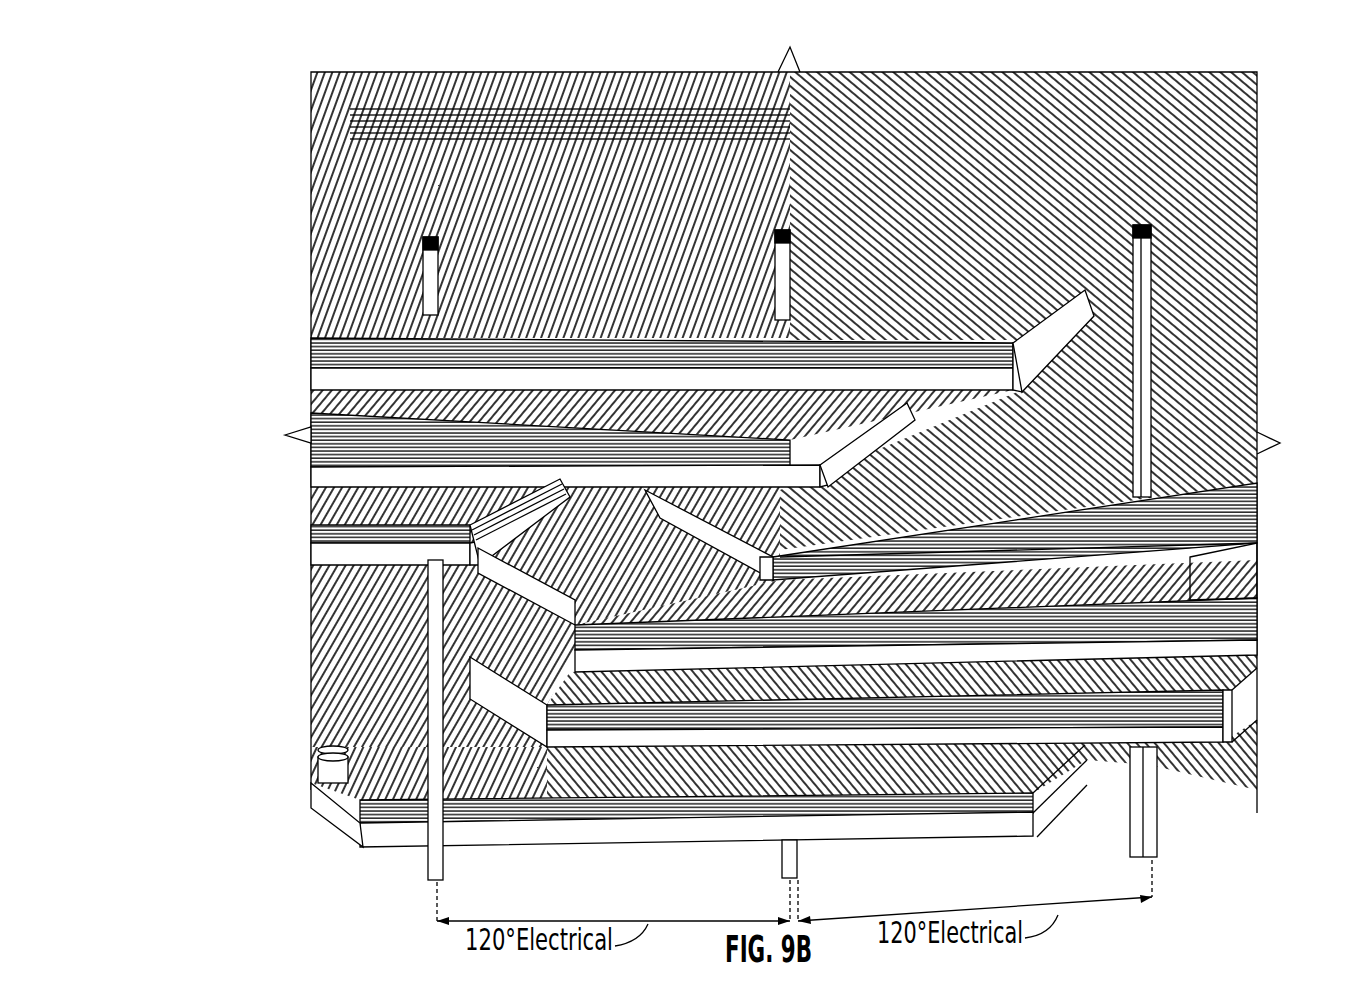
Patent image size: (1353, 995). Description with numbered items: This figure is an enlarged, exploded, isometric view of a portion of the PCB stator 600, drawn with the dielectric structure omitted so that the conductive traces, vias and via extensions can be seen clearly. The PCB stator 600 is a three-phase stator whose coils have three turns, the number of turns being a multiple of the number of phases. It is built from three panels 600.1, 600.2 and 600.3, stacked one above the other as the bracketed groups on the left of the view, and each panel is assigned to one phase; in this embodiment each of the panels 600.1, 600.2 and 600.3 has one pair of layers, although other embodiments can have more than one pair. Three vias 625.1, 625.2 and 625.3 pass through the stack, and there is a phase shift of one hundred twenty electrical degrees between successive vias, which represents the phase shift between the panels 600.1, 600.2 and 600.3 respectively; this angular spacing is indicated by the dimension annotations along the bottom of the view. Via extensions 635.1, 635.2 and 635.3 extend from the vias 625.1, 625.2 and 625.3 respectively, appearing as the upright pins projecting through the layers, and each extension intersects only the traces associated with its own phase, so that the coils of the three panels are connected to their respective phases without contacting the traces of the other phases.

The PCB stator 600 is at (243, 70).
The first panel 600.1 is at (283, 500).
The second panel 600.2 is at (283, 675).
The third panel 600.3 is at (283, 840).
The first via 625.1 is at (430, 294).
The second via 625.2 is at (1205, 562).
The third via 625.3 is at (820, 767).
The first via extension 635.1 is at (447, 770).
The second via extension 635.2 is at (1163, 375).
The third via extension 635.3 is at (790, 507).